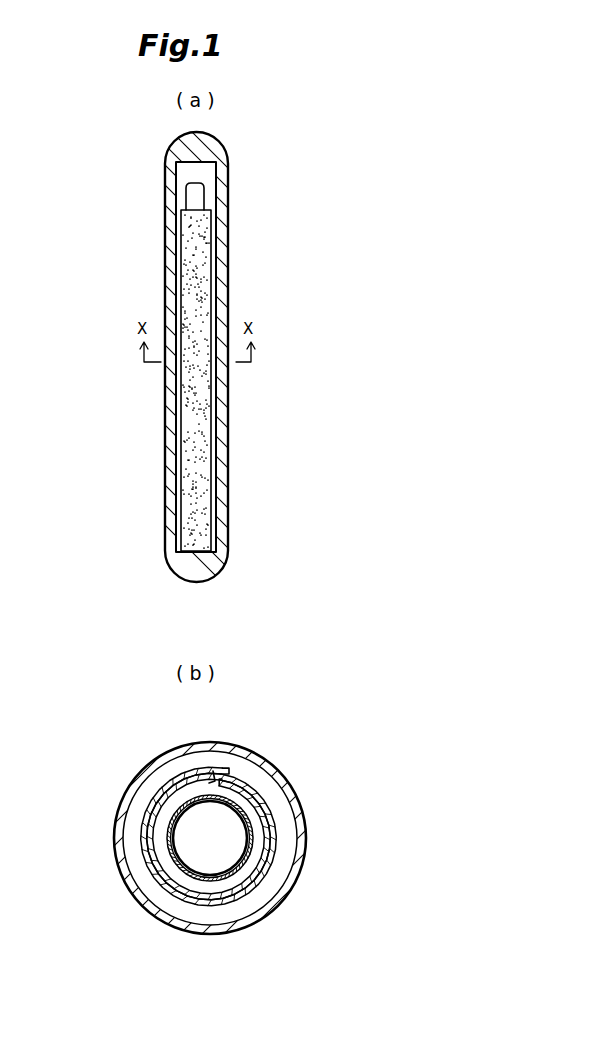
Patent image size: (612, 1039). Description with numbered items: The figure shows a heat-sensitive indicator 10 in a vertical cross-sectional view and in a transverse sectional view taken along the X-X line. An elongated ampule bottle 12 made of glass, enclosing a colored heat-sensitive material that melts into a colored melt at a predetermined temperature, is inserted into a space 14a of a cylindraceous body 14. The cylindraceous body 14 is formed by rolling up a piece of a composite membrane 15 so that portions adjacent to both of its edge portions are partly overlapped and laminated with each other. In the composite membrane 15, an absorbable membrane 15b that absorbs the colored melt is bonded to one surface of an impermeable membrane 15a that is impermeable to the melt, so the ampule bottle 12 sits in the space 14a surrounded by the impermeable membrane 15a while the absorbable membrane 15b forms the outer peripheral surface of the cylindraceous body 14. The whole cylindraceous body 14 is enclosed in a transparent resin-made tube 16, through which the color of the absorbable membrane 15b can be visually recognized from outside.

The heat-sensitive indicator 10 is at (294, 139).
The ampule bottle 12 is at (198, 196).
The cylindraceous body 14 is at (198, 402).
The space 14a is at (184, 797).
The composite membrane 15 is at (372, 768).
The impermeable membrane 15a is at (270, 832).
The absorbable membrane 15b is at (270, 866).
The transparent tube 16 is at (222, 458).